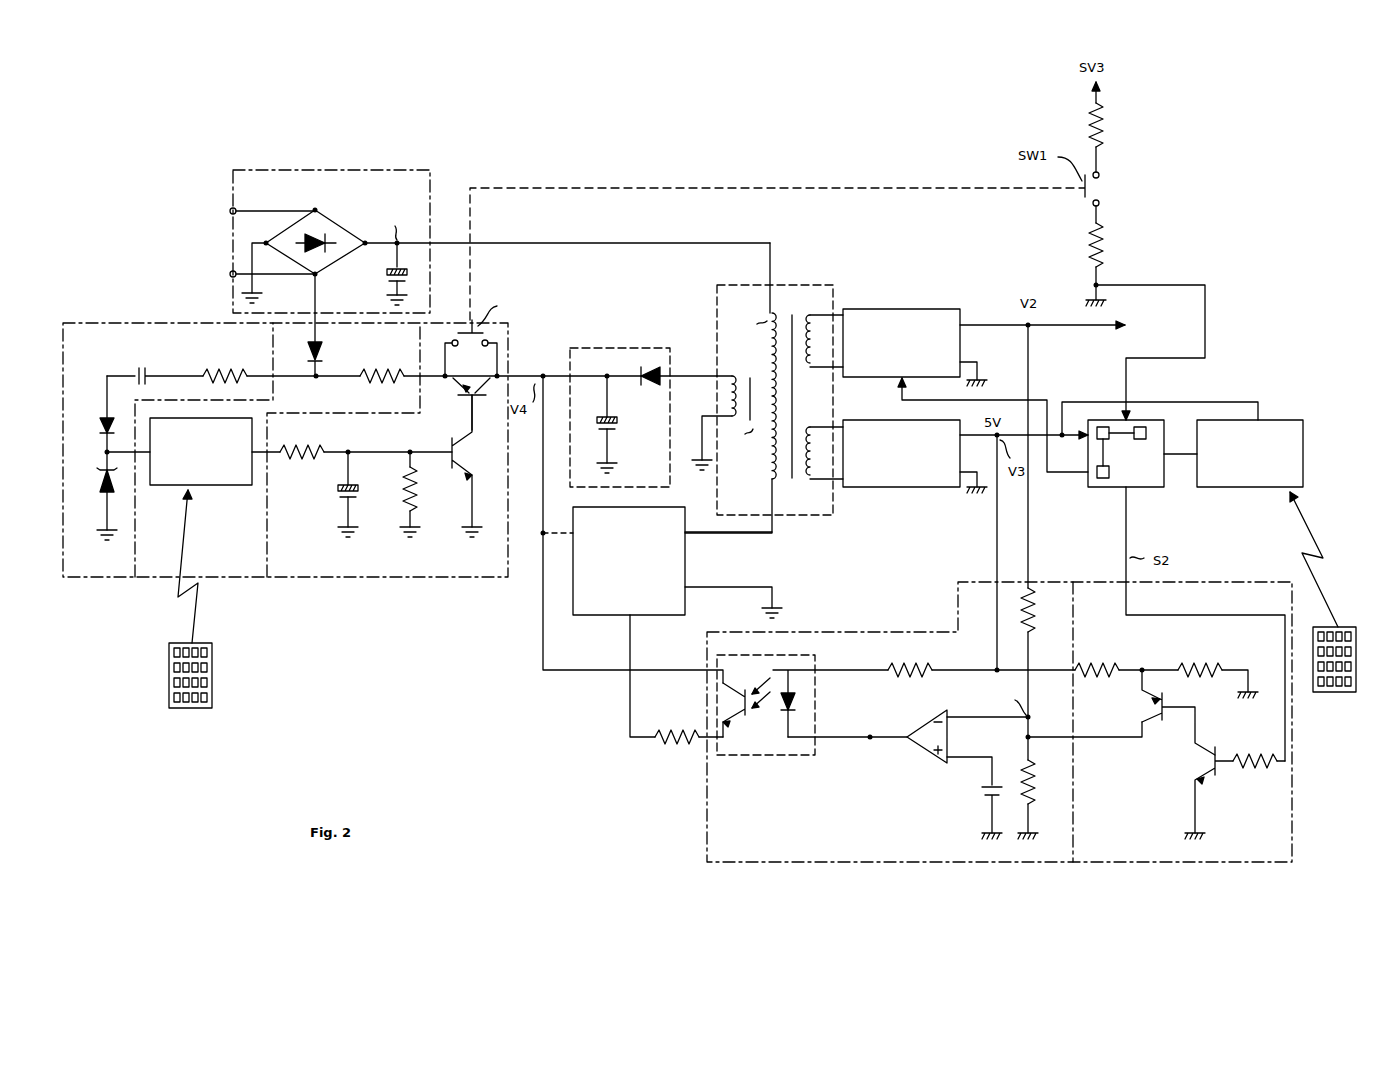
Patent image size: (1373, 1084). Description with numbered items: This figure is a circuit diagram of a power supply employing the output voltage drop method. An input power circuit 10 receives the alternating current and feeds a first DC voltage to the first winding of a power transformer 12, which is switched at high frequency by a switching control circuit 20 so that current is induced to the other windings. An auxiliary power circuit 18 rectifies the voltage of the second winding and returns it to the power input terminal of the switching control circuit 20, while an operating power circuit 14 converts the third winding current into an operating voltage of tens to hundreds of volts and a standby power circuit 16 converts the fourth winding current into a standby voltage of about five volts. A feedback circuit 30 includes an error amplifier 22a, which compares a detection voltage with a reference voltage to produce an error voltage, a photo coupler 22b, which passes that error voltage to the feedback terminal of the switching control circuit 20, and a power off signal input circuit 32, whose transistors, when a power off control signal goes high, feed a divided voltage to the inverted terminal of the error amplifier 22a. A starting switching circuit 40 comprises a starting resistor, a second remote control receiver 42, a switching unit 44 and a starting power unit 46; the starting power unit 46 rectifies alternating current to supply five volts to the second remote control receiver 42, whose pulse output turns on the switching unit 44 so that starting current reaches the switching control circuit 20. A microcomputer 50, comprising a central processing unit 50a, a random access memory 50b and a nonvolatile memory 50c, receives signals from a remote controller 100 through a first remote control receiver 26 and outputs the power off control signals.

The input power circuit 10 is at (343, 170).
The power transformer 12 is at (821, 280).
The operating power circuit 14 is at (908, 308).
The standby power circuit 16 is at (913, 490).
The auxiliary power circuit 18 is at (635, 347).
The switching control circuit 20 is at (600, 617).
The error amplifier 22a is at (930, 765).
The photo coupler 22b is at (775, 757).
The first remote control receiver 26 is at (1288, 416).
The feedback circuit 30 is at (955, 864).
The power off signal input circuit 32 is at (1279, 852).
The starting switching circuit 40 is at (95, 579).
The second remote control receiver 42 is at (226, 487).
The switching unit 44 is at (452, 565).
The starting power unit 46 is at (98, 569).
The microcomputer 50 is at (1127, 452).
The central processing unit 50a is at (1102, 425).
The random access memory 50b is at (1140, 425).
The nonvolatile memory 50c is at (1099, 484).
The remote controller 100 is at (1338, 695).